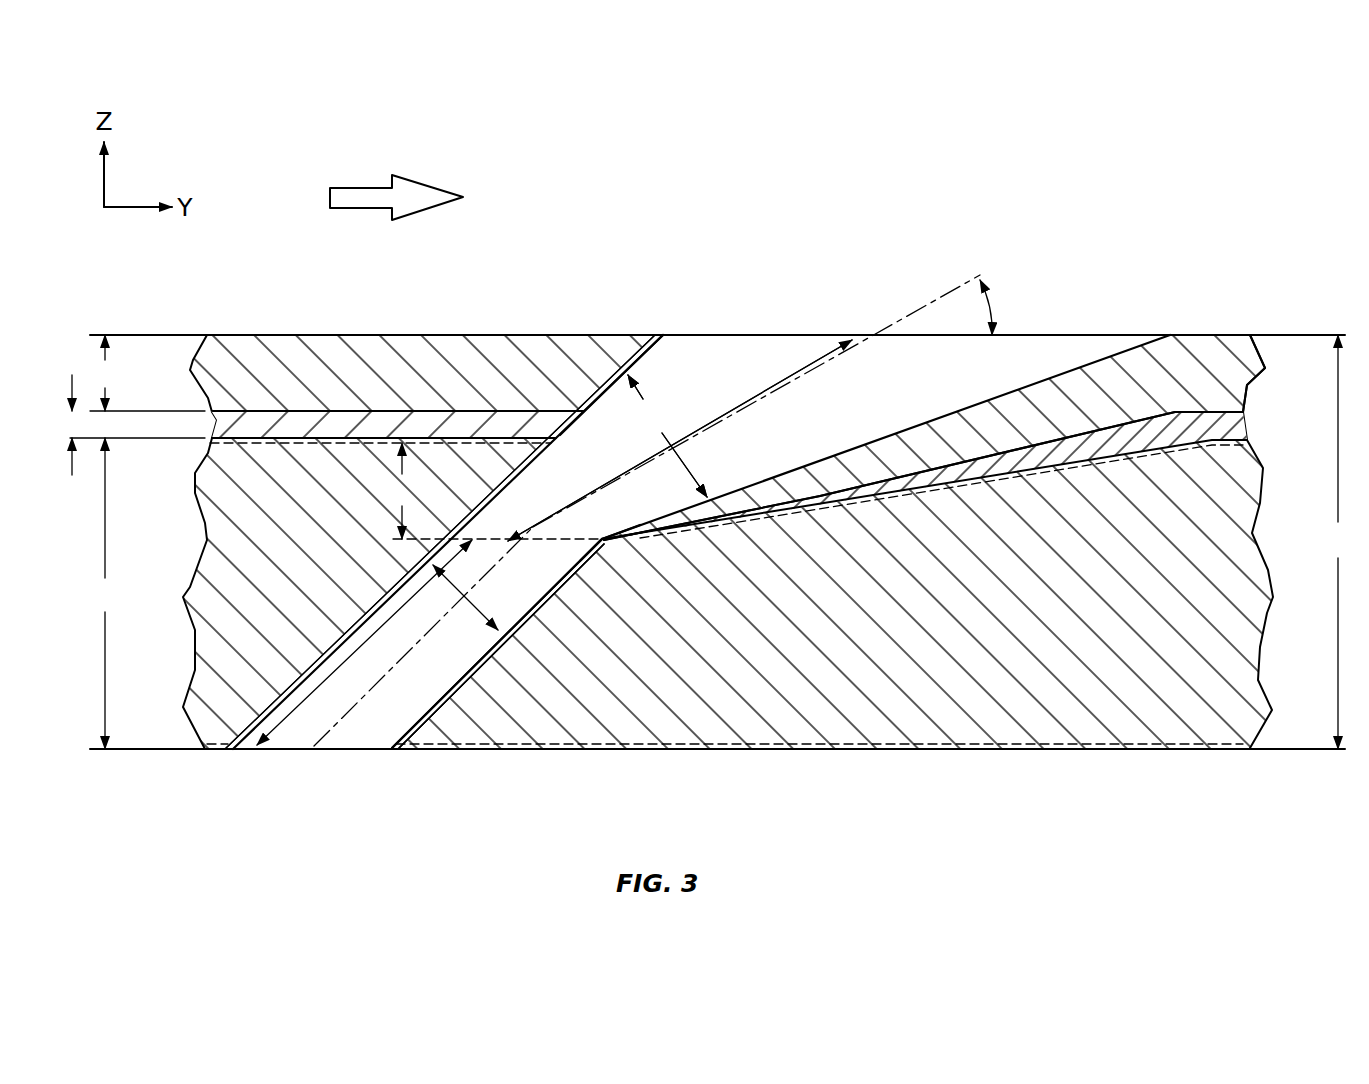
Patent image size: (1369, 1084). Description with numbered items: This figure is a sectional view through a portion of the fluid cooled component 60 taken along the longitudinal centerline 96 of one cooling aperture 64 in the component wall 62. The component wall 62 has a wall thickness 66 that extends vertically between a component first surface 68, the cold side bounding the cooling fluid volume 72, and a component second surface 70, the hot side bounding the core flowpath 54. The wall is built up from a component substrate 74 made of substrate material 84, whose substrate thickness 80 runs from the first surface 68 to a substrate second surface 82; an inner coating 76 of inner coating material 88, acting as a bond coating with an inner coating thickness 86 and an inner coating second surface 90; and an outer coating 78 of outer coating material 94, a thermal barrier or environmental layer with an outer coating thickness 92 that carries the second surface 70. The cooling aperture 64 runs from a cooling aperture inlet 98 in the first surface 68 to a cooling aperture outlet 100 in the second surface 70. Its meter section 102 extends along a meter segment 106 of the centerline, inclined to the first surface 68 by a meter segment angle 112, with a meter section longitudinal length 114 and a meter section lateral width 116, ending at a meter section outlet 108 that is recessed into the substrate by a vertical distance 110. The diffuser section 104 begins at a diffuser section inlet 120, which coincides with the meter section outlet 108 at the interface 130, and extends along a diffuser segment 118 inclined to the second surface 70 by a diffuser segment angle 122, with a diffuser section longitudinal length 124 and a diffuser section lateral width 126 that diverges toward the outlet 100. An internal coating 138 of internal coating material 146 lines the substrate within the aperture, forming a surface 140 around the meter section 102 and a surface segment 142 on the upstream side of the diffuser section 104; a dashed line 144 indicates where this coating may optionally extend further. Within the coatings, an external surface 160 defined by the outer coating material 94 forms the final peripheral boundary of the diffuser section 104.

The core flowpath 54 is at (577, 204).
The fluid cooled component 60 is at (1228, 218).
The component wall 62 is at (295, 330).
The cooling aperture 64 is at (802, 331).
The wall thickness 66 is at (1338, 542).
The component first surface 68 is at (1210, 752).
The component second surface 70 is at (1225, 333).
The cooling fluid volume 72 is at (509, 852).
The component substrate 74 is at (398, 508).
The inner coating 76 is at (205, 427).
The outer coating 78 is at (196, 350).
The substrate thickness 80 is at (105, 593).
The substrate second surface 82 is at (390, 394).
The substrate material 84 is at (1265, 600).
The inner coating thickness 86 is at (125, 463).
The inner coating material 88 is at (1245, 440).
The inner coating second surface 90 is at (438, 410).
The outer coating thickness 92 is at (147, 373).
The outer coating material 94 is at (1252, 386).
The longitudinal centerline 96 is at (345, 738).
The cooling aperture inlet 98 is at (315, 752).
The cooling aperture outlet 100 is at (700, 333).
The meter section 102 is at (472, 642).
The diffuser section 104 is at (620, 405).
The meter segment 106 is at (450, 675).
The meter section outlet 108 is at (490, 537).
The vertical distance 110 is at (400, 491).
The meter segment angle 112 is at (408, 740).
The meter section longitudinal length 114 is at (372, 632).
The meter section lateral width 116 is at (530, 617).
The diffuser segment 118 is at (790, 392).
The diffuser section inlet 120 is at (560, 590).
The diffuser segment angle 122 is at (993, 302).
The diffuser section longitudinal length 124 is at (780, 378).
The diffuser section lateral width 126 is at (667, 436).
The interface 130 is at (608, 542).
The internal coating 138 is at (275, 690).
The surface 140 is at (252, 752).
The surface segment 142 is at (552, 450).
The dashed line 144 is at (893, 500).
The internal coating material 146 is at (292, 672).
The external surface 160 is at (1088, 348).